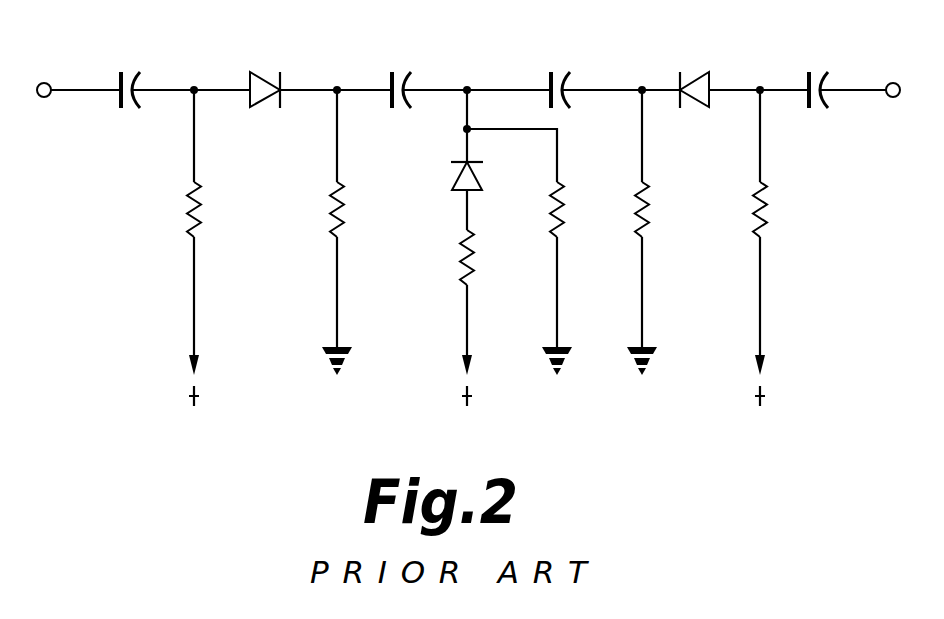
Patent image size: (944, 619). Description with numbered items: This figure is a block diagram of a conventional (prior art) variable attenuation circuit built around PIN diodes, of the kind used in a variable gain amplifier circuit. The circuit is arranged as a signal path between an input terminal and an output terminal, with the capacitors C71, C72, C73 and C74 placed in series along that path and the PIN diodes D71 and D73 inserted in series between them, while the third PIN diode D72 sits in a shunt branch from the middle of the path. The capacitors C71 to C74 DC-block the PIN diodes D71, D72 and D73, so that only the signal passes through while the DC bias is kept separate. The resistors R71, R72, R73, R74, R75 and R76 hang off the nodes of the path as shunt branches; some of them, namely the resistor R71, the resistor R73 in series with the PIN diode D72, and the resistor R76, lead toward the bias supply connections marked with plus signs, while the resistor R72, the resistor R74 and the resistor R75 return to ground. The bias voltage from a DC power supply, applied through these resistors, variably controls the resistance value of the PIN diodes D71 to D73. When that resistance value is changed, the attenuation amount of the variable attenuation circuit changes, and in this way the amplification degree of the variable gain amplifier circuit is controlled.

The capacitor C71 is at (132, 69).
The PIN diode D71 is at (266, 69).
The capacitor C72 is at (402, 69).
The capacitor C73 is at (560, 69).
The PIN diode D73 is at (694, 69).
The capacitor C74 is at (817, 69).
The resistor R71 is at (217, 248).
The resistor R72 is at (356, 232).
The PIN diode D72 is at (489, 178).
The resistor R73 is at (489, 298).
The resistor R74 is at (537, 252).
The resistor R75 is at (659, 232).
The resistor R76 is at (782, 248).